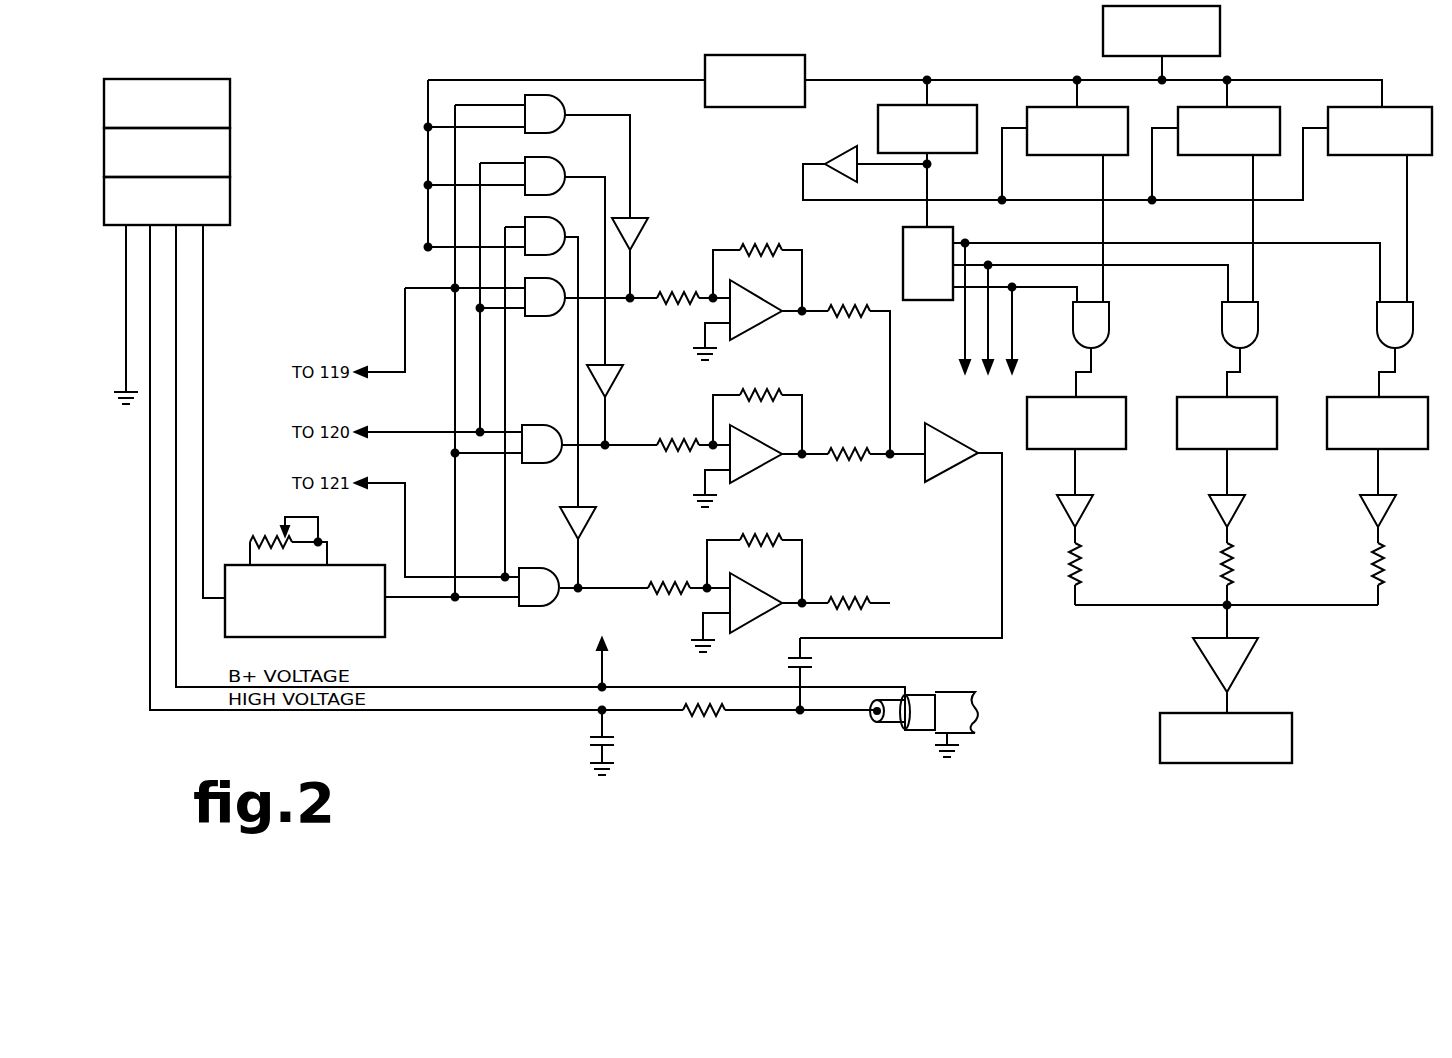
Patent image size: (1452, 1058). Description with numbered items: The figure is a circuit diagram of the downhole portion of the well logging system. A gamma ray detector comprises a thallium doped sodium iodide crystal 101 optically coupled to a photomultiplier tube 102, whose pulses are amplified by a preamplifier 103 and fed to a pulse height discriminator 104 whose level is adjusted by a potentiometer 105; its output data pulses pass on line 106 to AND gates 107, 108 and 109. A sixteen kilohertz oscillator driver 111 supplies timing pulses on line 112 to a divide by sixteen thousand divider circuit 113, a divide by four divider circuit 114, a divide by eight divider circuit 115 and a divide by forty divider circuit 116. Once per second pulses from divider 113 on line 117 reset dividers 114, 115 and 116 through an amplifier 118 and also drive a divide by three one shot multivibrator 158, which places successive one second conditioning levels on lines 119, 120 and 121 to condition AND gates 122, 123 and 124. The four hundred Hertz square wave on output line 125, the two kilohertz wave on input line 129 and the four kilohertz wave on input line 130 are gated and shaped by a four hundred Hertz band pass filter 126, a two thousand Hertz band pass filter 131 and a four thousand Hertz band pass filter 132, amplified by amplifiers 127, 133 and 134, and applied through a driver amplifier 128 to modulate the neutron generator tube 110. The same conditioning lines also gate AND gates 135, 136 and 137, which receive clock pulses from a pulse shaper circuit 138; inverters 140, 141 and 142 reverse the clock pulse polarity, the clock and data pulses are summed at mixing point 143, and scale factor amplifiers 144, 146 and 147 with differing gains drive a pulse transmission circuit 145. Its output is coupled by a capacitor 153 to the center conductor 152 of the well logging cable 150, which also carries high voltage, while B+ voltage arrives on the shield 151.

The thallium doped sodium iodide crystal 101 is at (232, 106).
The photomultiplier tube 102 is at (232, 155).
The preamplifier 103 is at (232, 209).
The pulse height discriminator 104 is at (384, 636).
The potentiometer 105 is at (284, 520).
The line 106 is at (452, 378).
The AND gate 107 is at (546, 567).
The AND gate 108 is at (556, 393).
The AND gate 109 is at (549, 318).
The neutron generator tube 110 is at (1165, 713).
The 16 kilohertz oscillator driver 111 is at (1103, 31).
The line 112 is at (850, 80).
The divide by 16,000 divider circuit 113 is at (878, 117).
The divide by 4 divider circuit 114 is at (1075, 155).
The divide by 8 divider circuit 115 is at (1222, 155).
The divide by 40 divider circuit 116 is at (1370, 155).
The line 117 is at (933, 188).
The amplifier 118 is at (838, 150).
The line 119 is at (965, 334).
The line 120 is at (985, 352).
The line 121 is at (1009, 352).
The AND gate 122 is at (1377, 322).
The AND gate 123 is at (1259, 327).
The AND gate 124 is at (1110, 327).
The output line 125 is at (1407, 205).
The 400 Hertz band pass filter 126 is at (1360, 397).
The amplifier 127 is at (1369, 523).
The driver amplifier 128 is at (1251, 655).
The input line 129 is at (1254, 289).
The input line 130 is at (1104, 289).
The 2000 Hertz band pass filter 131 is at (1249, 397).
The 4000 Hertz band pass filter 132 is at (1105, 397).
The amplifier 133 is at (1235, 523).
The amplifier 134 is at (1082, 523).
The AND gate 135 is at (558, 220).
The AND gate 136 is at (565, 161).
The AND gate 137 is at (558, 100).
The pulse shaper circuit 138 is at (718, 55).
The inverter 140 is at (633, 218).
The inverter 141 is at (613, 386).
The inverter 142 is at (596, 521).
The mixing point 143 is at (630, 303).
The scale factor amplifier 144 is at (769, 319).
The pulse transmission circuit 145 is at (956, 472).
The scale factor amplifier 146 is at (769, 462).
The scale factor amplifier 147 is at (752, 626).
The well logging cable 150 is at (962, 700).
The shield 151 is at (910, 697).
The center conductor 152 is at (822, 713).
The capacitor 153 is at (812, 662).
The divide by 3 one shot multivibrator 158 is at (903, 246).